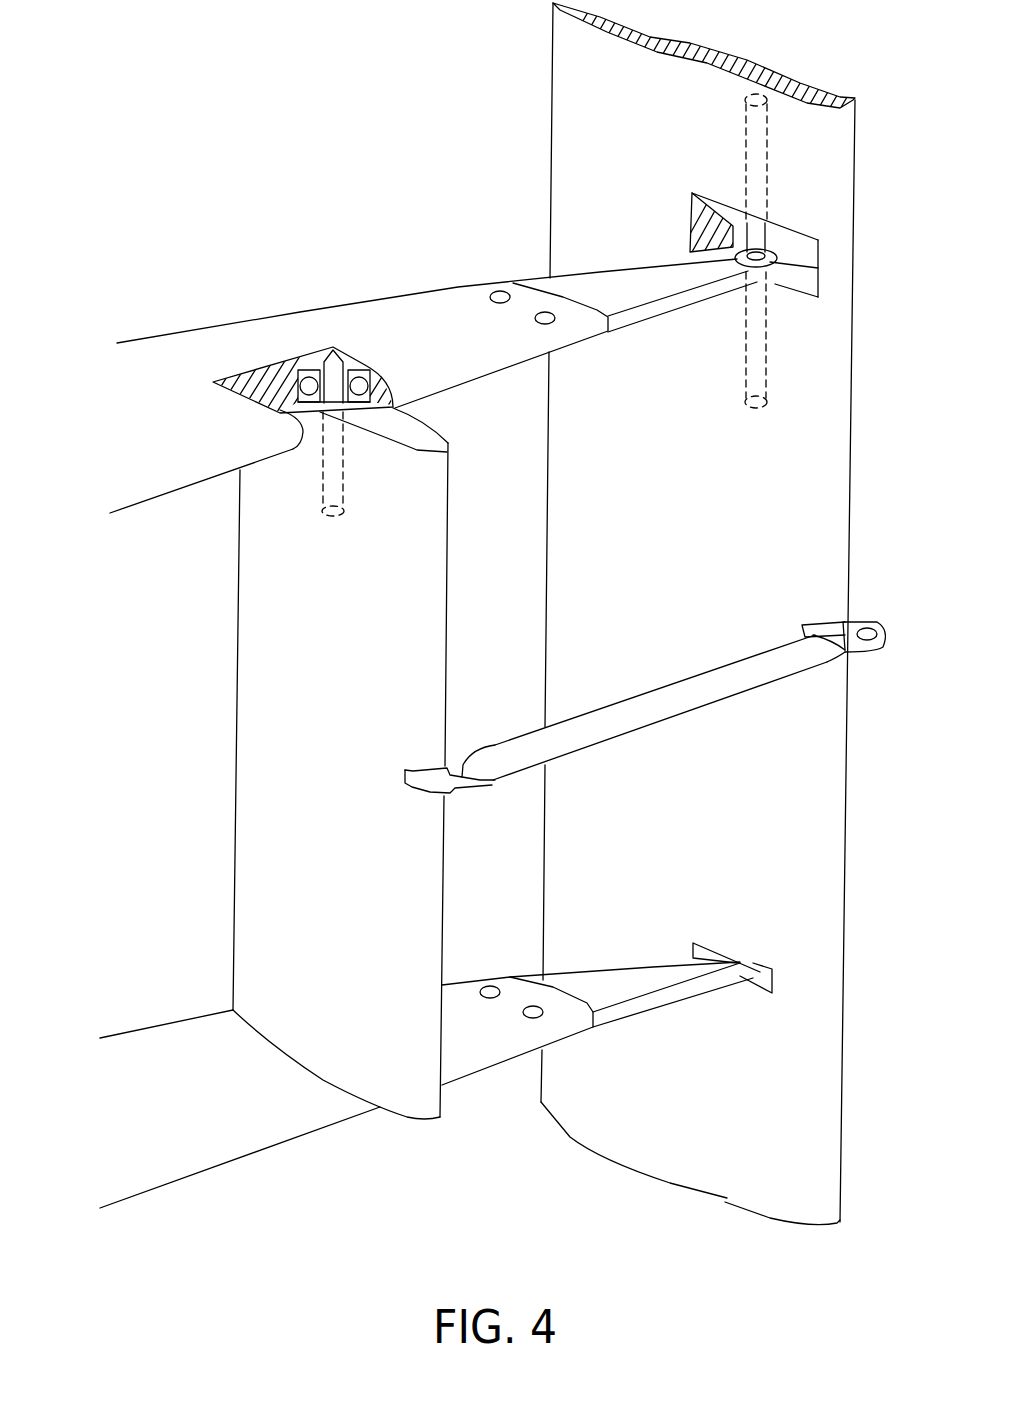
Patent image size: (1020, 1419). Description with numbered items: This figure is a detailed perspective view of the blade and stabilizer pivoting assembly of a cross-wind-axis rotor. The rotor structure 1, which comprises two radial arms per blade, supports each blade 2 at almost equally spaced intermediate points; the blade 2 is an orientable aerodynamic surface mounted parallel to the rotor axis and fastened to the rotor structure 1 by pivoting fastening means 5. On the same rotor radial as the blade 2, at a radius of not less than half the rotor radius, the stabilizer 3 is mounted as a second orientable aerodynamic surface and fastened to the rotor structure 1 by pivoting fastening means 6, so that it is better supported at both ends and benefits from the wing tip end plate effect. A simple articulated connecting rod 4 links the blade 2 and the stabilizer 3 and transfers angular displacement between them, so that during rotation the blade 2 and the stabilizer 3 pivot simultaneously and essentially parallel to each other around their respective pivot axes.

The rotor structure 1 is at (190, 328).
The blade 2 is at (551, 194).
The stabilizer 3 is at (237, 725).
The articulated connecting rod 4 is at (687, 712).
The pivoting fastening means 5 is at (752, 282).
The pivoting fastening means 6 is at (330, 346).